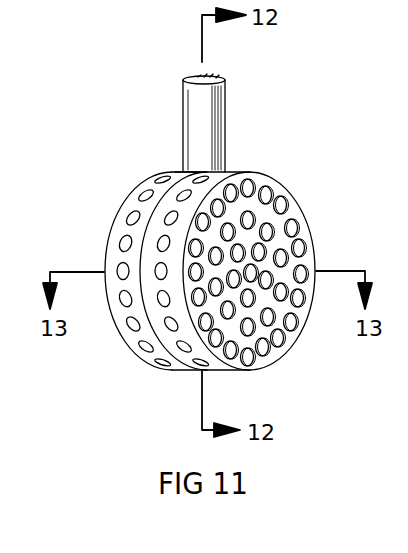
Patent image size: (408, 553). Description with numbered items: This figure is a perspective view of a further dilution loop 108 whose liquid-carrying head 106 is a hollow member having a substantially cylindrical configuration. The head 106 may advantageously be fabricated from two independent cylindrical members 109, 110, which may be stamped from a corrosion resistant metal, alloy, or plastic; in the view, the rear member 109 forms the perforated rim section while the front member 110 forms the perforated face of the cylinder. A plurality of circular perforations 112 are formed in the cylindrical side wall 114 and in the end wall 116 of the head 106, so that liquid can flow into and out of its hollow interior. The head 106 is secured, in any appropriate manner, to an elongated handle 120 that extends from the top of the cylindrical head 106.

The liquid-carrying head 106 is at (122, 194).
The dilution loop 108 is at (156, 165).
The cylindrical member 109 is at (110, 238).
The cylindrical member 110 is at (292, 347).
The circular perforations 112 is at (198, 371).
The cylindrical side wall 114 is at (137, 340).
The end wall 116 is at (291, 208).
The elongated handle 120 is at (222, 123).